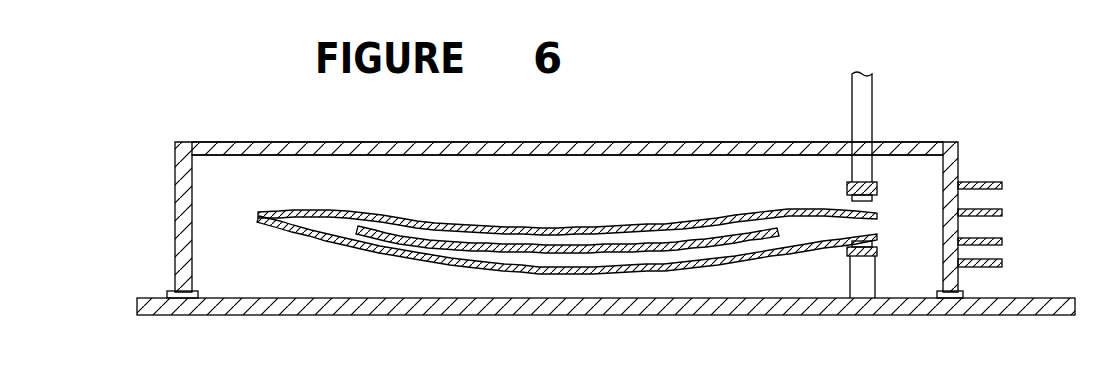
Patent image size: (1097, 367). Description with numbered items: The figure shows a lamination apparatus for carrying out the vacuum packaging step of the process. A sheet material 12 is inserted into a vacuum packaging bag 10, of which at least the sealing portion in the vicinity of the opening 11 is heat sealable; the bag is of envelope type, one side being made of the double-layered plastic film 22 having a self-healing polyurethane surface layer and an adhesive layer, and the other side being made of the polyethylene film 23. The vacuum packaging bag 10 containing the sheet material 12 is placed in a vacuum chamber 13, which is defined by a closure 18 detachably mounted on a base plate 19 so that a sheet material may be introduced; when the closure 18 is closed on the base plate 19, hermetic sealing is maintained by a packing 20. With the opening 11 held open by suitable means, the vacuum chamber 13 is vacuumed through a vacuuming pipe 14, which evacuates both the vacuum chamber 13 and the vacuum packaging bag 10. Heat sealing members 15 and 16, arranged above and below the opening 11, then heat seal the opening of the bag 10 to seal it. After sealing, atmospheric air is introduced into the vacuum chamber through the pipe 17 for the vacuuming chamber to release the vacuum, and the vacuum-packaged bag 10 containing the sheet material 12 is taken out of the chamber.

The vacuum packaging bag 10 is at (567, 225).
The opening 11 is at (870, 225).
The sheet material 12 is at (462, 244).
The vacuum chamber 13 is at (588, 186).
The vacuuming pipe 14 is at (984, 200).
The heat sealing member 15 is at (878, 186).
The heat sealing member 16 is at (862, 248).
The pipe for the vacuuming chamber 17 is at (990, 250).
The closure 18 is at (276, 150).
The base plate 19 is at (620, 304).
The packing 20 is at (187, 298).
The plastic film 22 is at (410, 212).
The polyethylene film 23 is at (694, 270).